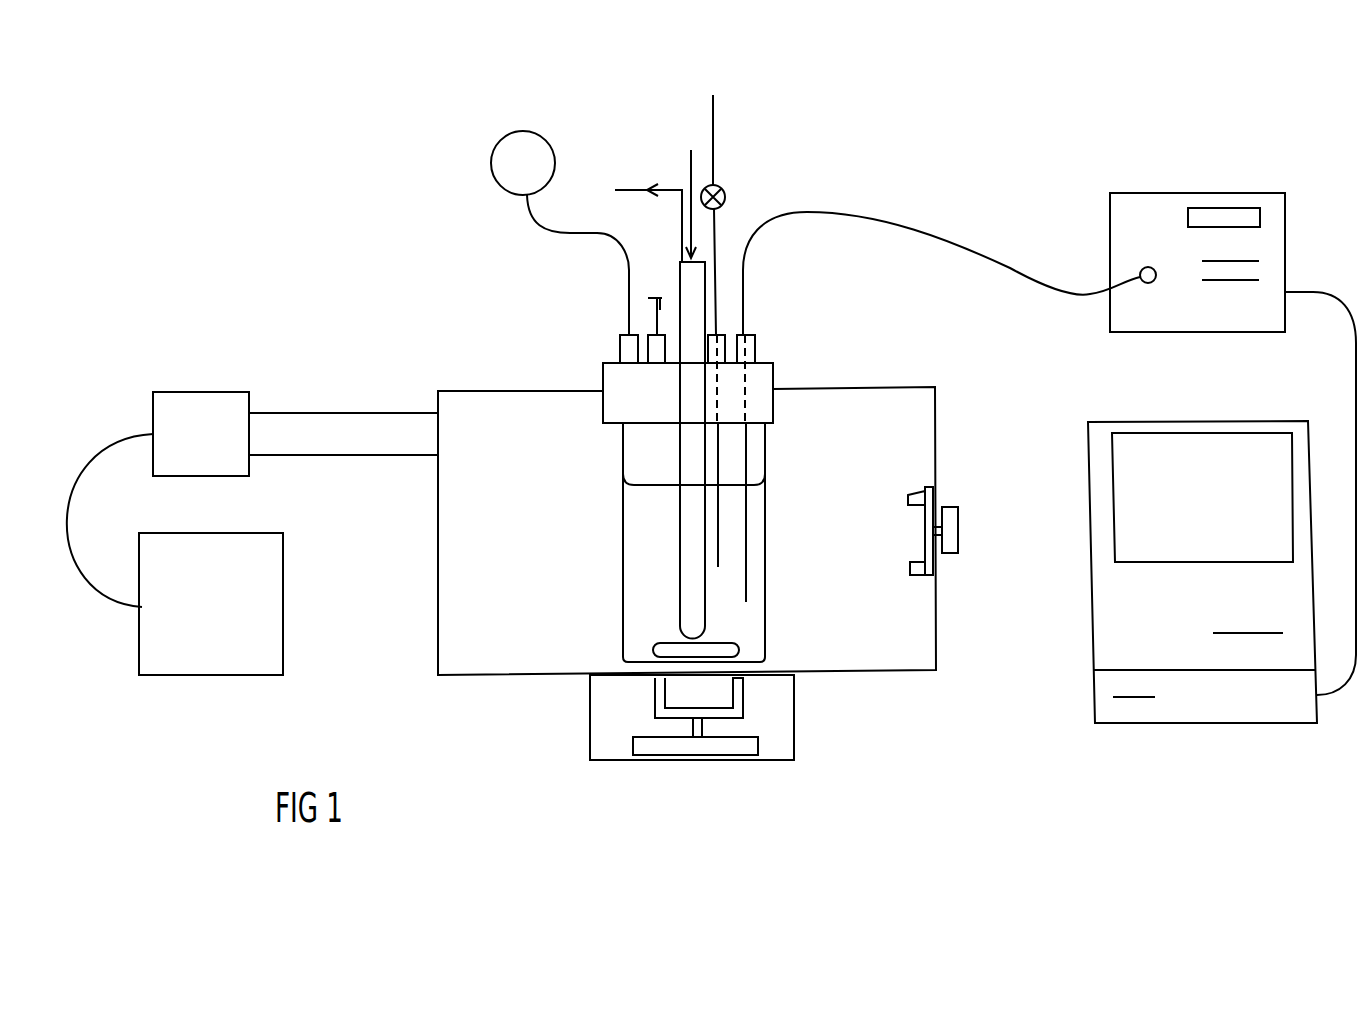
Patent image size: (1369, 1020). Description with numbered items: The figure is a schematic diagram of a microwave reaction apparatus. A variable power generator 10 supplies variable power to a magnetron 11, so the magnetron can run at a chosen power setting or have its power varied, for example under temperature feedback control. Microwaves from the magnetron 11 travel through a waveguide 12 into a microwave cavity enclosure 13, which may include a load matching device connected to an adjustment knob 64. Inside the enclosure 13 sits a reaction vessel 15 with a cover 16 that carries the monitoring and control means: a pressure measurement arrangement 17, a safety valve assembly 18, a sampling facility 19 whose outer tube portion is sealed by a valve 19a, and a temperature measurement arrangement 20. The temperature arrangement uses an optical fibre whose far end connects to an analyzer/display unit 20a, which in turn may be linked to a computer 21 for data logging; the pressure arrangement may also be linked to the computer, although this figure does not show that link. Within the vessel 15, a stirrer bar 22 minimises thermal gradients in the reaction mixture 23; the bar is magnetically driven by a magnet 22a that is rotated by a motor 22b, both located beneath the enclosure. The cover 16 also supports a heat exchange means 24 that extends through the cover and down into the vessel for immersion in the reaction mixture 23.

The variable power generator 10 is at (210, 657).
The magnetron 11 is at (187, 417).
The waveguide 12 is at (328, 428).
The microwave cavity enclosure 13 is at (502, 655).
The reaction vessel 15 is at (623, 445).
The cover 16 is at (757, 373).
The pressure measurement arrangement 17 is at (627, 300).
The safety valve assembly 18 is at (650, 296).
The sampling facility 19 is at (713, 122).
The valve 19a is at (727, 195).
The temperature measurement arrangement 20 is at (745, 276).
The analyzer/display unit 20a is at (1142, 208).
The computer 21 is at (1188, 700).
The stirrer bar 22 is at (667, 650).
The magnet 22a is at (740, 697).
The motor 22b is at (722, 747).
The reaction mixture 23 is at (643, 532).
The heat exchange means 24 is at (693, 610).
The adjustment knob 64 is at (953, 515).